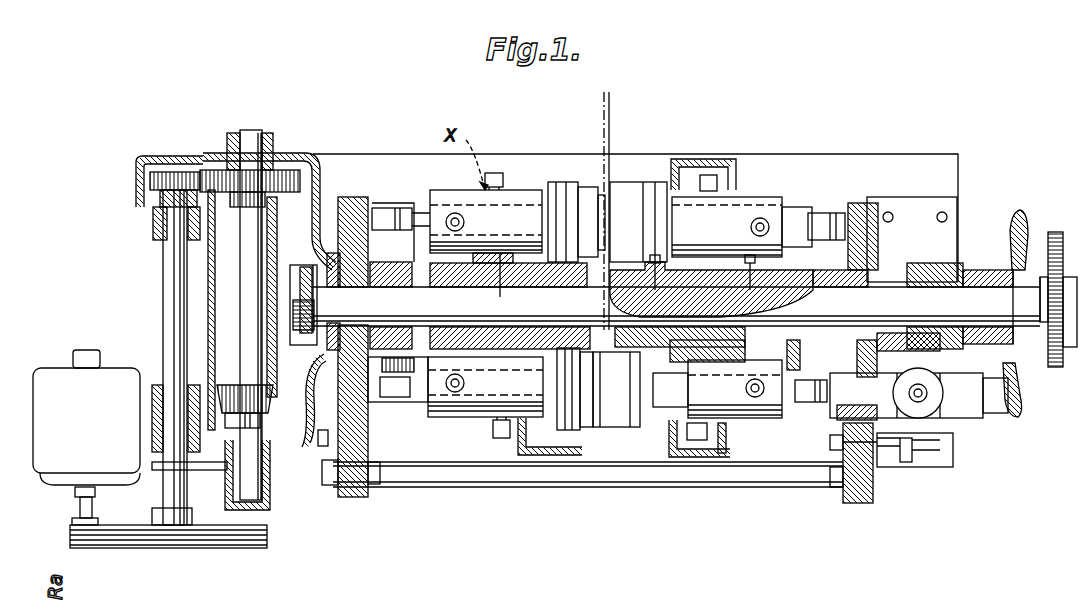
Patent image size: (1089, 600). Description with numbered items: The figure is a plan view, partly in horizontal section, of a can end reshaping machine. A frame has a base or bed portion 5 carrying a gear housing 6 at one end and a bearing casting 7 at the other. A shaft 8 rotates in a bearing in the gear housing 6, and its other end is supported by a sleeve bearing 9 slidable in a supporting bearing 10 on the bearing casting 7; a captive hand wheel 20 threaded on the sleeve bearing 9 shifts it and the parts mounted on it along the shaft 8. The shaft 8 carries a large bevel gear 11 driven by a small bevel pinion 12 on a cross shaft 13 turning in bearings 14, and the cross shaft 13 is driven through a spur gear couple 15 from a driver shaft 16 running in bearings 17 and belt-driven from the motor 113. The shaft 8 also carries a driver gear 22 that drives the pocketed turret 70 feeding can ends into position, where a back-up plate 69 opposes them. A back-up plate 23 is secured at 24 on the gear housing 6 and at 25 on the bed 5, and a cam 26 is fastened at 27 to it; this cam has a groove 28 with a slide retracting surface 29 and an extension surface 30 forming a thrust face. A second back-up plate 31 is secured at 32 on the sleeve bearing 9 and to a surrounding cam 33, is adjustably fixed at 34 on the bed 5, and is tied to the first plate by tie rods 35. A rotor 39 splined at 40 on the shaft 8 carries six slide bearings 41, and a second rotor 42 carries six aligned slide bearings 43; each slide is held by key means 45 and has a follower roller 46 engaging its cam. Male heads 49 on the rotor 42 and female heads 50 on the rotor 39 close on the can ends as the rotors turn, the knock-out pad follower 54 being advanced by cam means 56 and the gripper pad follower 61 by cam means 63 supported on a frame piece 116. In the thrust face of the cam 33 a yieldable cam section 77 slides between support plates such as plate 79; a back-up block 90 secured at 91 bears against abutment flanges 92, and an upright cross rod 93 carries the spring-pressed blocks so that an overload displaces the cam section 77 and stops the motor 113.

The base or bed portion 5 is at (382, 154).
The gear housing 6 is at (318, 168).
The bearing casting 7 is at (952, 228).
The shaft 8 is at (392, 311).
The sleeve bearing 9 is at (935, 293).
The supporting bearing 10 is at (945, 264).
The large bevel gear 11 is at (282, 252).
The small bevel pinion 12 is at (240, 390).
The cross shaft 13 is at (264, 122).
The bearings 14 is at (275, 150).
The spur gear couple 15 is at (190, 176).
The driver shaft 16 is at (165, 253).
The bearings 17 is at (153, 222).
The hand wheel 20 is at (1022, 213).
The driver gear 22 is at (1056, 232).
The back-up plate 23 is at (353, 498).
The securing means 24 is at (342, 290).
The securing means 25 is at (322, 446).
The cam 26 is at (412, 262).
The securing means 27 is at (333, 253).
The groove 28 is at (425, 327).
The slide retracting surface 29 is at (420, 262).
The extension surface 30 is at (376, 402).
The back-up plate 31 is at (850, 503).
The securing means 32 is at (880, 265).
The cam 33 is at (828, 290).
The adjustable securing means 34 is at (890, 460).
The tie rods 35 is at (640, 480).
The rotor 39 is at (702, 285).
The spline 40 is at (677, 290).
The slide bearings 41 is at (752, 205).
The second rotor 42 is at (531, 327).
The slide bearings 43 is at (462, 194).
The key means 45 is at (765, 222).
The follower roller 46 is at (386, 214).
The male can end engaging head 49 is at (563, 182).
The female can end engaging head 50 is at (650, 182).
The follower 54 is at (495, 172).
The cam means 56 is at (502, 297).
The follower 61 is at (709, 175).
The cam means 63 is at (700, 347).
The back-up plate 69 is at (609, 130).
The pocketed turret 70 is at (602, 156).
The cam section 77 is at (845, 419).
The support plate 79 is at (1005, 405).
The back-up block 90 is at (938, 405).
The securing means 91 is at (946, 468).
The abutment flanges 92 is at (1021, 402).
The cross rod 93 is at (952, 442).
The motor 113 is at (150, 449).
The frame piece 116 is at (722, 458).